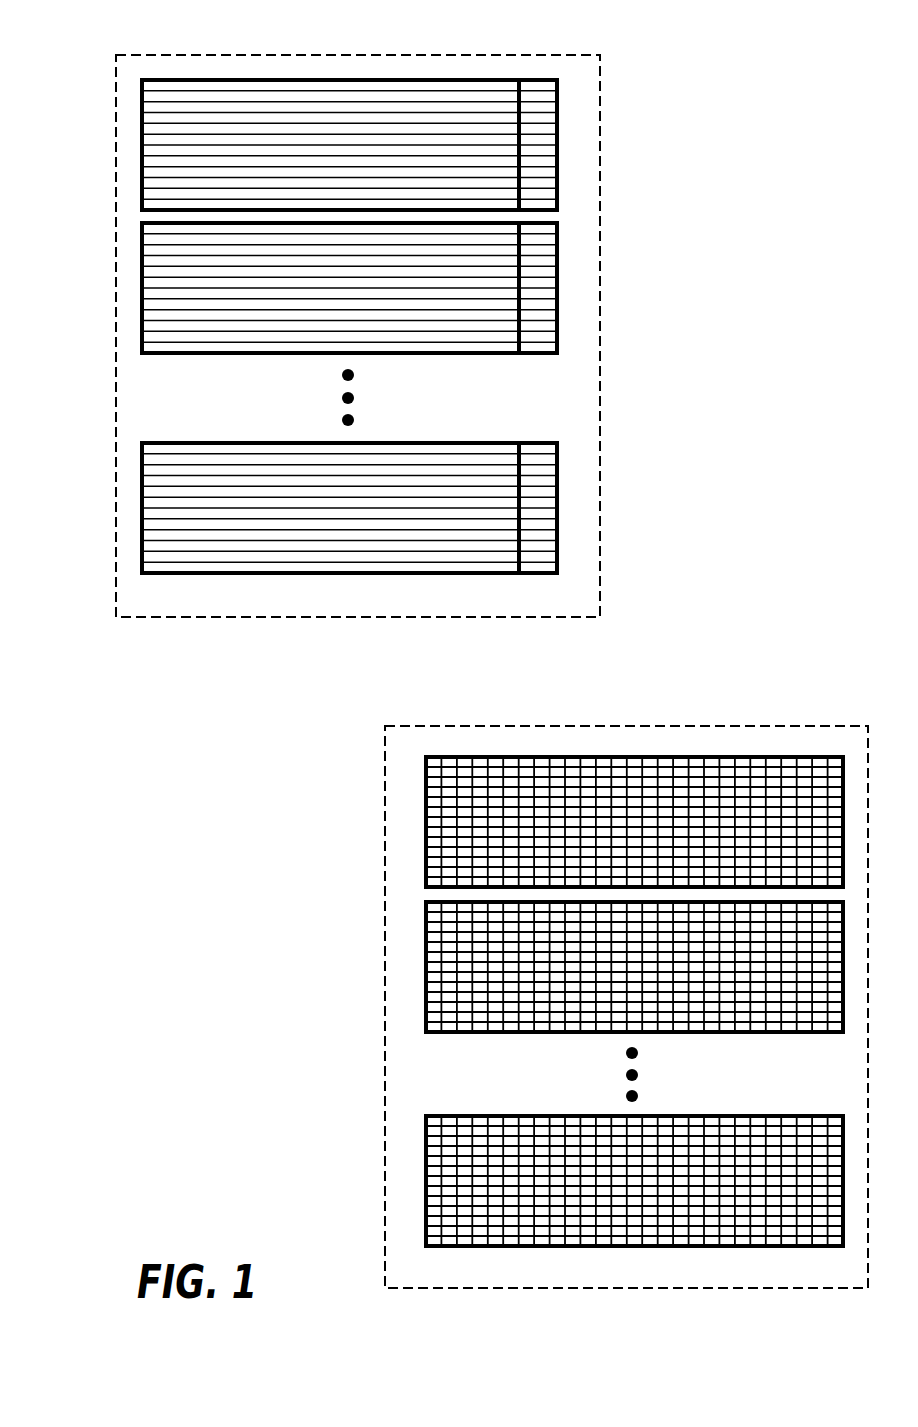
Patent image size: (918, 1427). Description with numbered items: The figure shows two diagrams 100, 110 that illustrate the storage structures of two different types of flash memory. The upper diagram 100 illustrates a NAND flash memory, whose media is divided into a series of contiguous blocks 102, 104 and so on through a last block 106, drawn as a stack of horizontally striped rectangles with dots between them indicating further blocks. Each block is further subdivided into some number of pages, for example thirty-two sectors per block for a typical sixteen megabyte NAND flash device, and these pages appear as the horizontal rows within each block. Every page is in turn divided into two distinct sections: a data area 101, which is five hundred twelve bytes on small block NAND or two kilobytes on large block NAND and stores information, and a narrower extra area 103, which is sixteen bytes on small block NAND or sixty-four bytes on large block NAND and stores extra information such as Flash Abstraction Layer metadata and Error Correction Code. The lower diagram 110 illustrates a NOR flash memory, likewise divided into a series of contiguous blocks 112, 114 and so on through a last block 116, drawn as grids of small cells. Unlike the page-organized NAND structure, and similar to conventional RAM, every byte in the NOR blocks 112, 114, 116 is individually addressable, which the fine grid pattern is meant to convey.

The diagram 100 is at (629, 60).
The data area 101 is at (320, 76).
The block 102 is at (296, 117).
The extra area 103 is at (540, 76).
The block 104 is at (135, 293).
The block 106 is at (135, 493).
The diagram 110 is at (707, 707).
The block 112 is at (417, 808).
The block 114 is at (417, 953).
The block 116 is at (417, 1168).